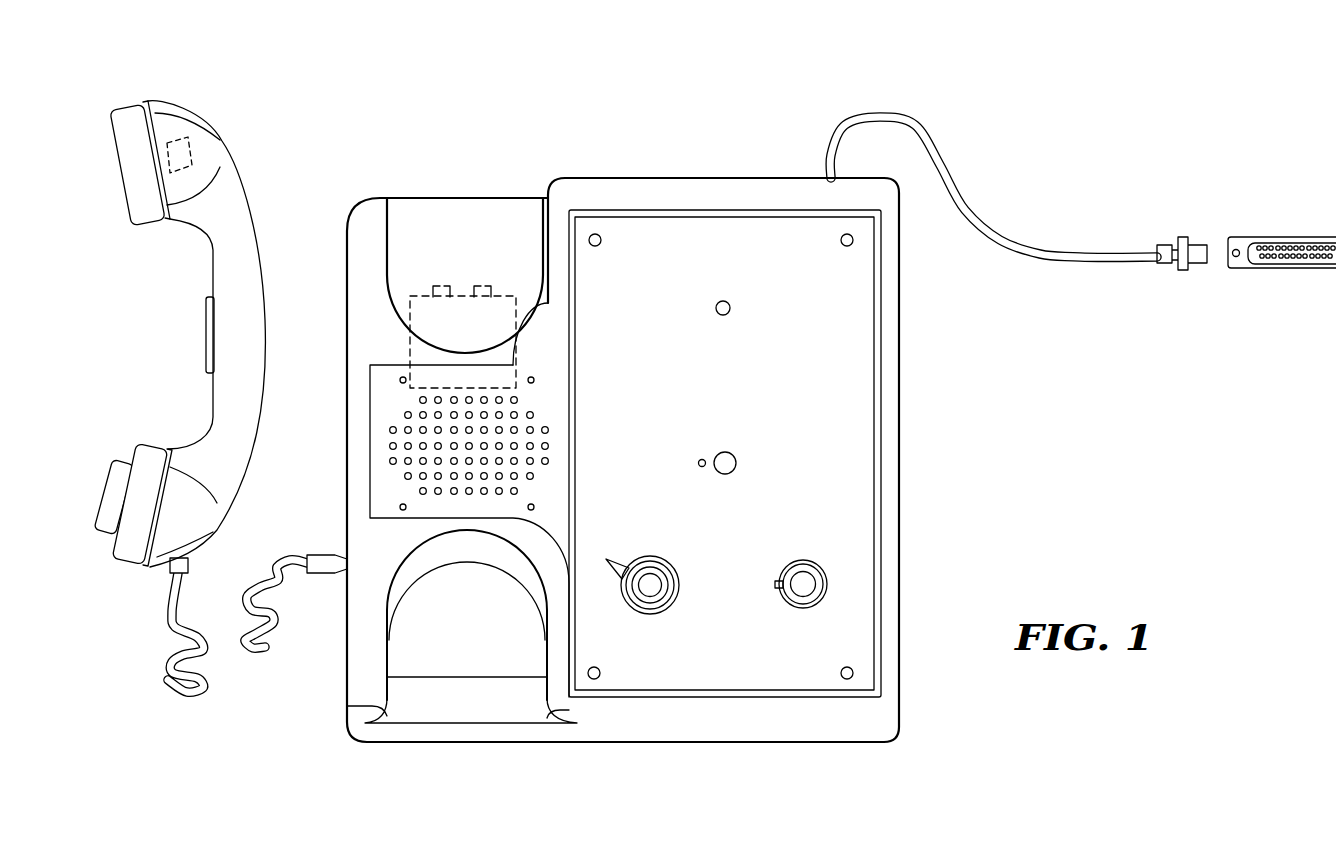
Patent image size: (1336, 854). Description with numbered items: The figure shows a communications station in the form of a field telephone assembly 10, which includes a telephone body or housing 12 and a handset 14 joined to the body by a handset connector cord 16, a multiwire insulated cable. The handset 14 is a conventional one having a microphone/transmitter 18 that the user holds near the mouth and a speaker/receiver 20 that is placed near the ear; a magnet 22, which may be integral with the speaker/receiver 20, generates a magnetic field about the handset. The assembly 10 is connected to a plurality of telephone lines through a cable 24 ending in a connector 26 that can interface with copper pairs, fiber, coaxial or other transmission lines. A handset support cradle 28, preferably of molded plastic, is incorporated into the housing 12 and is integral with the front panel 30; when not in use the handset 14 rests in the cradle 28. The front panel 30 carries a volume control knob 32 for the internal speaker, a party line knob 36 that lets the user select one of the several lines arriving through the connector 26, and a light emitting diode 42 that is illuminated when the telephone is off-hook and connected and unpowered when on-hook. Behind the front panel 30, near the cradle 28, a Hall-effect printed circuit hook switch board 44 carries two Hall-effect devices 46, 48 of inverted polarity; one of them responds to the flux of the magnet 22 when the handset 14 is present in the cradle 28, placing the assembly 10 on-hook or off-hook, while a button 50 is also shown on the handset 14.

The field telephone assembly 10 is at (818, 400).
The telephone body or housing 12 is at (782, 177).
The handset 14 is at (205, 372).
The handset connector cord 16 is at (168, 648).
The microphone/transmitter 18 is at (102, 483).
The speaker/receiver 20 is at (125, 112).
The magnet 22 is at (195, 135).
The cable 24 is at (1057, 250).
The connector 26 is at (1281, 237).
The handset support cradle 28 is at (549, 186).
The front panel 30 is at (600, 190).
The volume control knob 32 is at (810, 561).
The party line knob 36 is at (676, 596).
The light emitting diode (LED) 42 is at (731, 312).
The Hall-effect printed circuit hook switch board 44 is at (410, 305).
The Hall-effect device (HED) 46 is at (440, 283).
The Hall-effect device (HED) 48 is at (482, 283).
The push-to-talk button 50 is at (206, 322).